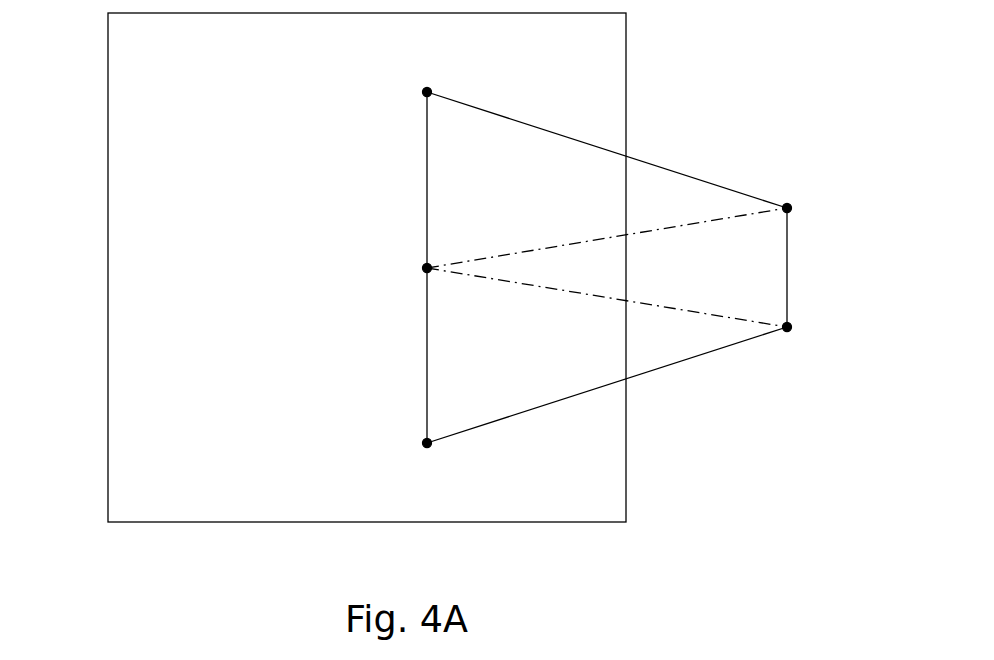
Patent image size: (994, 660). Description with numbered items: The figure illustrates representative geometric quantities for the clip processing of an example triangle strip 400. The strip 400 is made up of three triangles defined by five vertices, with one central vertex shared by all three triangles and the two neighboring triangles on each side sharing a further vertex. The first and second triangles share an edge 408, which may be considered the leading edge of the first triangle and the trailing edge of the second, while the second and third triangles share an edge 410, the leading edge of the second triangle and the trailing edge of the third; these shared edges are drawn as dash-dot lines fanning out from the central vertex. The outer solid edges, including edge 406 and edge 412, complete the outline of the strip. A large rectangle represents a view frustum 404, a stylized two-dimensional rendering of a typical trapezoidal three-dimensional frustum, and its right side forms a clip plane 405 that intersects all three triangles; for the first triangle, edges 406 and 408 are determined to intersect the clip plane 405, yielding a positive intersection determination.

The triangle strip 400 is at (554, 272).
The view frustum 404 is at (158, 72).
The clip plane 405 is at (626, 70).
The edge 406 is at (517, 122).
The edge 408 is at (670, 227).
The edge 410 is at (723, 318).
The edge between vertices 402(5) and 402(4) 412 is at (532, 410).